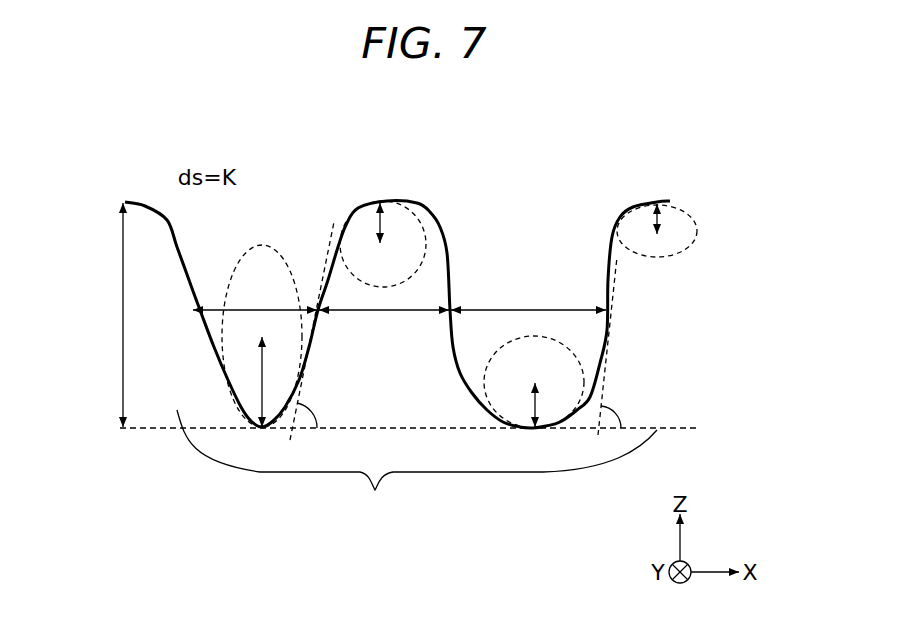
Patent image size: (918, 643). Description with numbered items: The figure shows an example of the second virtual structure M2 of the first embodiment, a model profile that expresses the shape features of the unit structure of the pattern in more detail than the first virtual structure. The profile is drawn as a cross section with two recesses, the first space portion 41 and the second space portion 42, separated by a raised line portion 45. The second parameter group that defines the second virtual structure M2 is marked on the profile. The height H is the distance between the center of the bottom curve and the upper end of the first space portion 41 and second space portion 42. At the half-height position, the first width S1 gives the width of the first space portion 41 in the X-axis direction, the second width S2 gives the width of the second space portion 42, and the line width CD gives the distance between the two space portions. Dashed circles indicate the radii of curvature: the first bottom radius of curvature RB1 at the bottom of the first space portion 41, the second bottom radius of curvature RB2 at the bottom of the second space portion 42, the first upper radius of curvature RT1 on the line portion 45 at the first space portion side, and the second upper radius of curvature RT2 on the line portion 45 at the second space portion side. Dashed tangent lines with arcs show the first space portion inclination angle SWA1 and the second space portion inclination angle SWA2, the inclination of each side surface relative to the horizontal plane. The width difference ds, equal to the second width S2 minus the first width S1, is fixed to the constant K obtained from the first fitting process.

The second virtual structure M2 is at (134, 136).
The first space portion 41 is at (300, 197).
The second space portion 42 is at (530, 194).
The line portion 45 is at (382, 410).
The height H is at (106, 315).
The first width S1 is at (255, 296).
The second width S2 is at (528, 296).
The line width CD is at (384, 327).
The first upper radius of curvature RT1 is at (345, 222).
The second upper radius of curvature RT2 is at (620, 221).
The first bottom radius of curvature RB1 is at (262, 372).
The second bottom radius of curvature RB2 is at (535, 399).
The first space portion inclination angle SWA1 is at (311, 410).
The second space portion inclination angle SWA2 is at (615, 412).